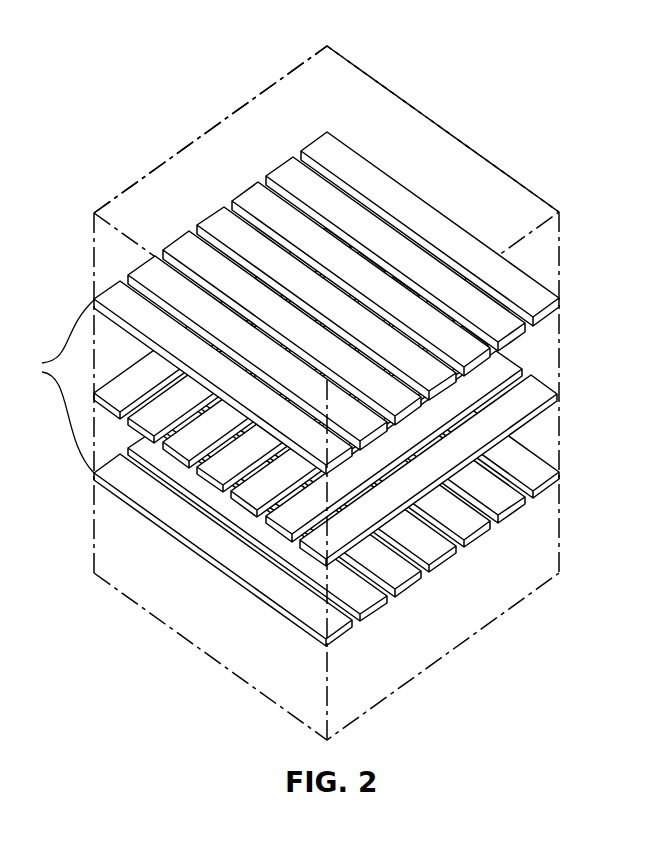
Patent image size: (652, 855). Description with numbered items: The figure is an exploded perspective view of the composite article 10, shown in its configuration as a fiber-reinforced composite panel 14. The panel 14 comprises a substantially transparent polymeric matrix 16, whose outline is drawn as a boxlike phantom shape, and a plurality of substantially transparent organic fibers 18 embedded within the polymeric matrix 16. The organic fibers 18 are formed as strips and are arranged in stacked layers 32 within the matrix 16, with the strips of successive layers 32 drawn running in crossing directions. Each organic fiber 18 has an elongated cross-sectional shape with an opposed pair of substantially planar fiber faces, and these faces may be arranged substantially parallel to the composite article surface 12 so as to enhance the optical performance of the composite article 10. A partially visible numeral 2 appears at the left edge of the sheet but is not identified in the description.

The composite article 10 is at (381, 80).
The composite article surface 12 is at (414, 136).
The fiber-reinforced composite panel 14 is at (193, 141).
The polymeric matrix 16 is at (534, 233).
The organic fibers 18 is at (520, 333).
The layers 32 is at (52, 386).
The partial numeral 2 is at (5, 493).